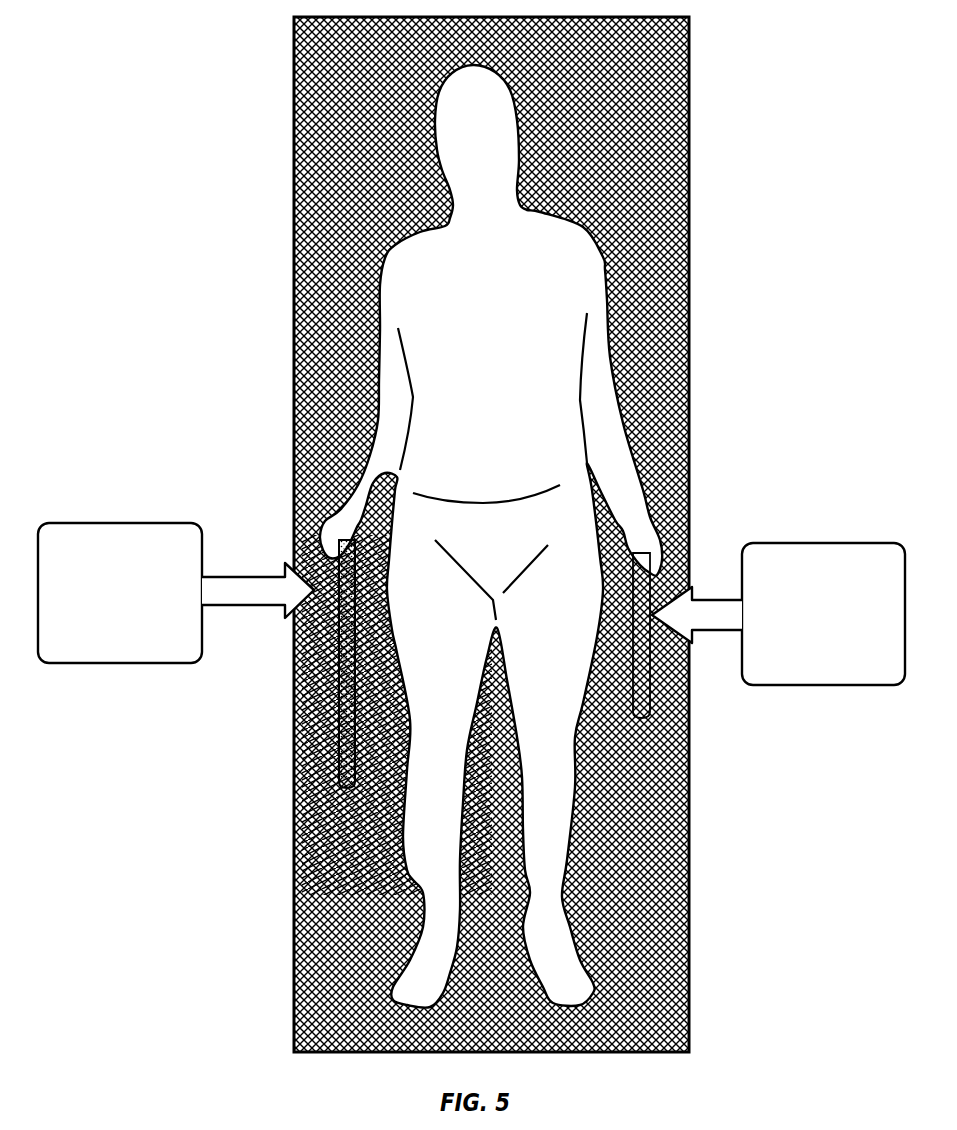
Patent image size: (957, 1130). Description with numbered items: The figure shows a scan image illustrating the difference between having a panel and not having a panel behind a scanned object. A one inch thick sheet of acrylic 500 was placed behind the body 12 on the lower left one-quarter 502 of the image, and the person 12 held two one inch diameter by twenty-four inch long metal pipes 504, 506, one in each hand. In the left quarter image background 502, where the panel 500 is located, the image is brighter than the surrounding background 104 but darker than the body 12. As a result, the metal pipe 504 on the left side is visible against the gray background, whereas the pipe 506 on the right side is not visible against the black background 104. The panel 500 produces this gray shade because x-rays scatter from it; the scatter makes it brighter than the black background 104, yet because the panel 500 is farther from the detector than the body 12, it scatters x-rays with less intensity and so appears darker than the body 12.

The background 104 is at (662, 193).
The body 12 is at (504, 308).
The sheet of acrylic 500 is at (335, 787).
The lower left one-quarter 502 is at (232, 529).
The metal pipe 504 is at (163, 523).
The metal pipe 506 is at (780, 543).